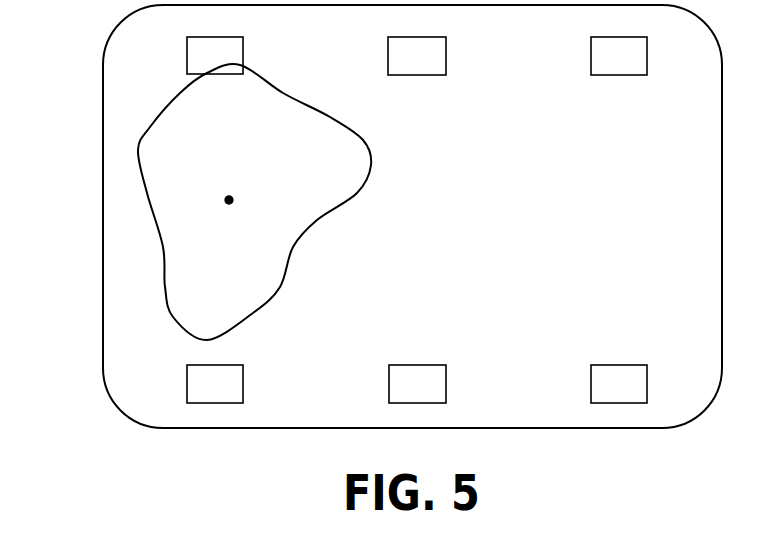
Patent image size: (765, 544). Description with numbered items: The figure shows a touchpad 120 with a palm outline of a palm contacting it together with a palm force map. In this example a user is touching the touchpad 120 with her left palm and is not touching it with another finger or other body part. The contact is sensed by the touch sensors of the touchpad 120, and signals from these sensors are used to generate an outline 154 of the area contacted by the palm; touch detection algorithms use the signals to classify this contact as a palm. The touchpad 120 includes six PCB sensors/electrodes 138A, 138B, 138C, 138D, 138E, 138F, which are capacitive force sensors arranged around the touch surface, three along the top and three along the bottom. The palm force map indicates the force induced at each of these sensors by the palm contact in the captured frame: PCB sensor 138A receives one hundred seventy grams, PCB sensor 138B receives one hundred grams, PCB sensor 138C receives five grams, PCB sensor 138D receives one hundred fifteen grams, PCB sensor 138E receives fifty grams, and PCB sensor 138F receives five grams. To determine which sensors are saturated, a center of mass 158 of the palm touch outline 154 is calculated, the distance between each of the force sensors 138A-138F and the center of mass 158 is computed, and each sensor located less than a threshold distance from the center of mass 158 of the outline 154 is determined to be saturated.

The touchpad 120 is at (103, 131).
The palm touch outline 154 is at (163, 232).
The center of mass 158 is at (229, 200).
The PCB sensor 138A is at (215, 37).
The PCB sensor 138B is at (420, 37).
The PCB sensor 138C is at (598, 37).
The PCB sensor 138D is at (215, 365).
The PCB sensor 138E is at (410, 365).
The PCB sensor 138F is at (615, 365).